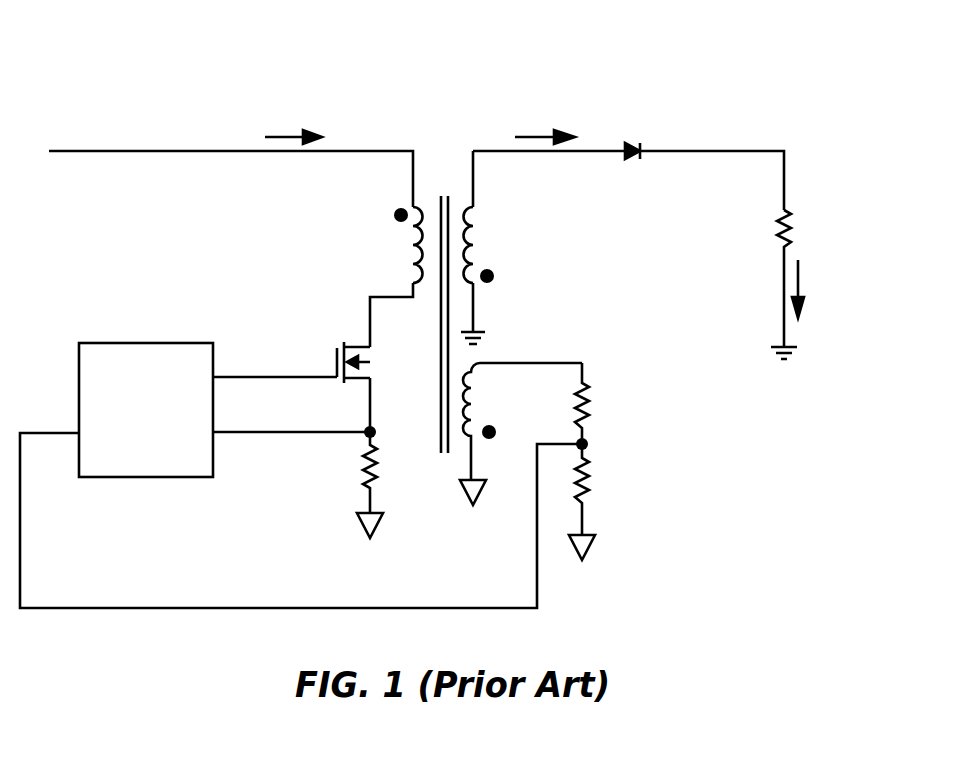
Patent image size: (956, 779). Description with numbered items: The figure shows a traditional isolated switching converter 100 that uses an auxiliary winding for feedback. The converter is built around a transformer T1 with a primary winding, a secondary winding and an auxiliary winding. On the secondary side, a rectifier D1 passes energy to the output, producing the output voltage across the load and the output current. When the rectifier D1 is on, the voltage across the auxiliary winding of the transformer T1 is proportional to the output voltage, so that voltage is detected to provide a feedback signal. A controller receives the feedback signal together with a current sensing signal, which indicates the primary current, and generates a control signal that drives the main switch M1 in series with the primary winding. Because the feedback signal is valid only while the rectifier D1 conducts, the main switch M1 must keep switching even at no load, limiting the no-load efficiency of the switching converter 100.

The isolated switching converter 100 is at (752, 70).
The transformer T1 is at (488, 299).
The rectifier D1 is at (632, 136).
The main switch M1 is at (348, 348).